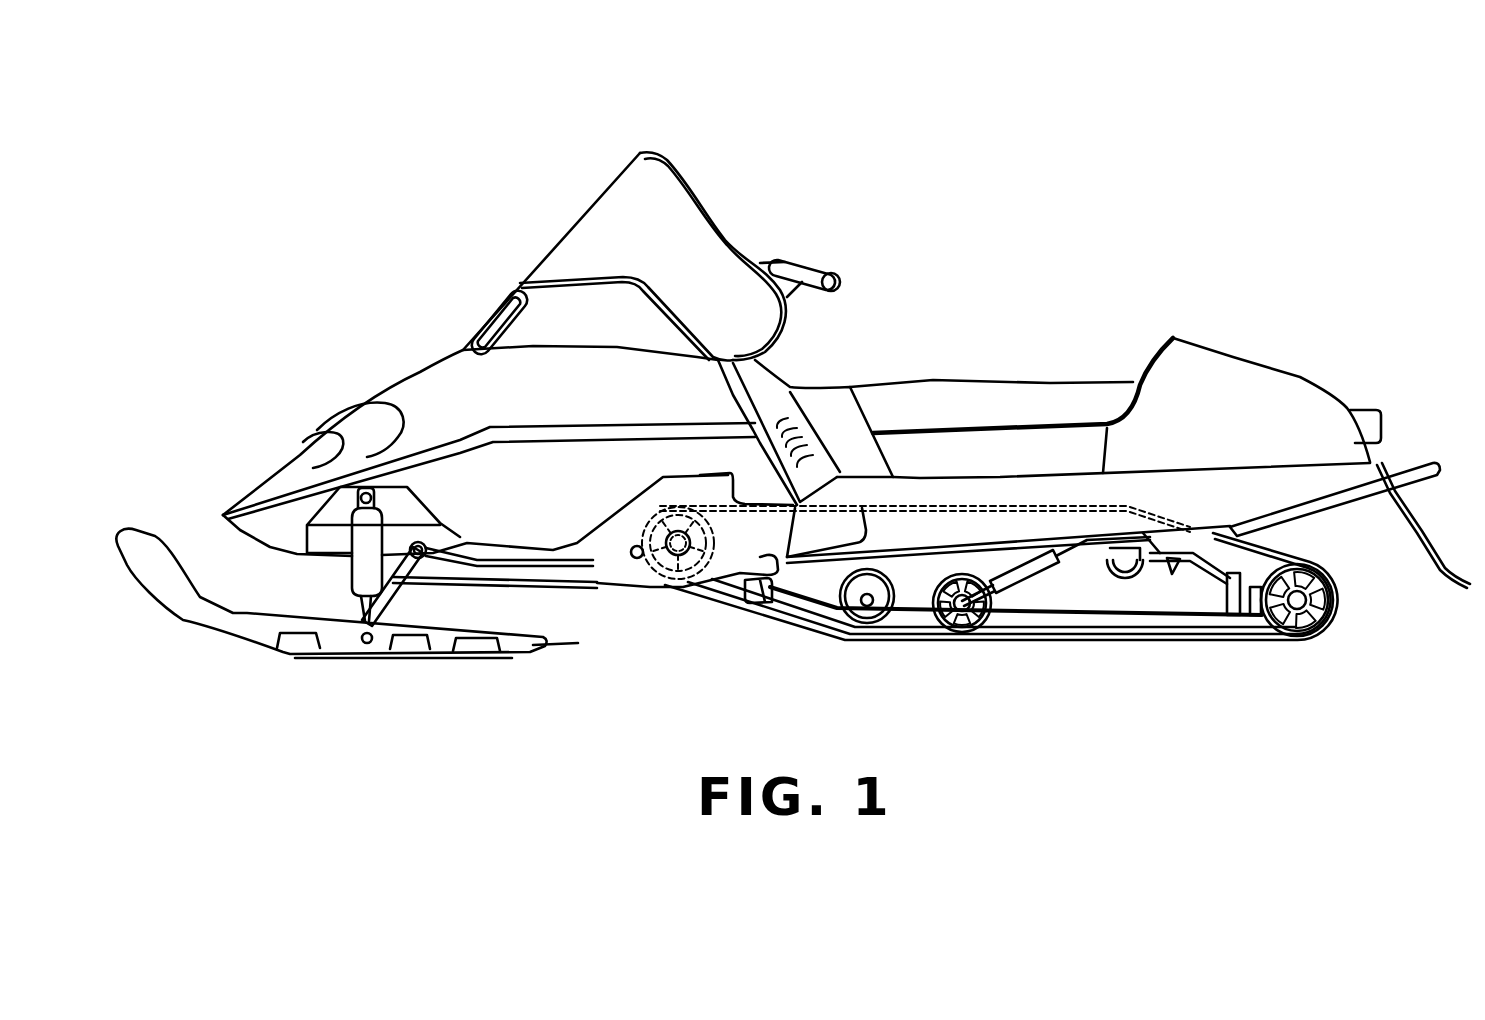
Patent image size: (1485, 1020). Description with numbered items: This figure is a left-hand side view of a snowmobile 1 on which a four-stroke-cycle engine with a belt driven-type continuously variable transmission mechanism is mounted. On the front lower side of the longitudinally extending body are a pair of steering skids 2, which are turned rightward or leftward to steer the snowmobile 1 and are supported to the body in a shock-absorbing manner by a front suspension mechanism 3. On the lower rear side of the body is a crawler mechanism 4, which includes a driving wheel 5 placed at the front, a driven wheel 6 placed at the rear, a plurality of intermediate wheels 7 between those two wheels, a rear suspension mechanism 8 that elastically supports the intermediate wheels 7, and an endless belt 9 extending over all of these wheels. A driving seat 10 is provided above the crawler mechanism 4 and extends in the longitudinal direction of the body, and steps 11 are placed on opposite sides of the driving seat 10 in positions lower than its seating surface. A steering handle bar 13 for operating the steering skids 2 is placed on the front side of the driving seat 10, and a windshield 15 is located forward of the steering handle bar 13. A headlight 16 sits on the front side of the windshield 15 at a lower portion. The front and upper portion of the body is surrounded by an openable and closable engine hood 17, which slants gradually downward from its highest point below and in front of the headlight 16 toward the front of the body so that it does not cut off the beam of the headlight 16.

The snowmobile 1 is at (958, 162).
The steering skids 2 is at (205, 630).
The front suspension mechanism 3 is at (357, 577).
The crawler mechanism 4 is at (1203, 660).
The driving wheel 5 is at (643, 588).
The driven wheel 6 is at (1313, 612).
The intermediate wheels 7 is at (960, 634).
The rear suspension mechanism 8 is at (1020, 604).
The endless belt 9 is at (1101, 644).
The driving seat 10 is at (995, 393).
The steps 11 is at (1105, 412).
The steering handle bar 13 is at (806, 268).
The windshield 15 is at (588, 218).
The headlight 16 is at (487, 318).
The engine hood 17 is at (418, 377).